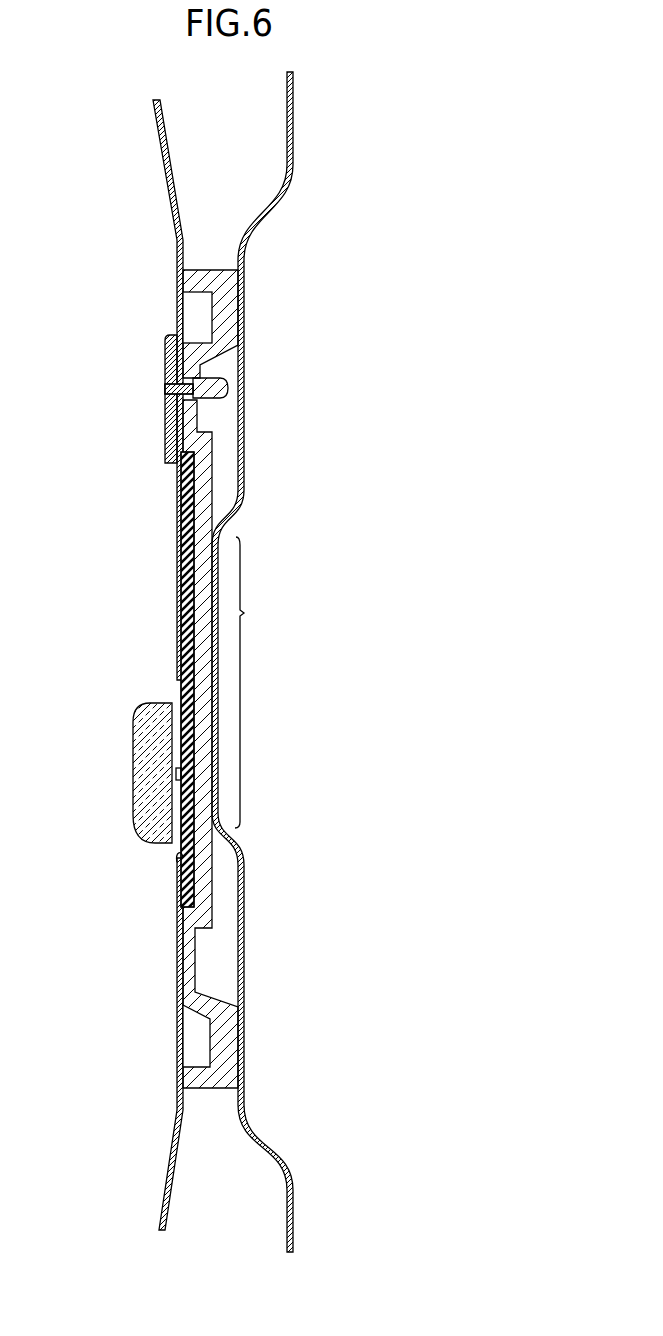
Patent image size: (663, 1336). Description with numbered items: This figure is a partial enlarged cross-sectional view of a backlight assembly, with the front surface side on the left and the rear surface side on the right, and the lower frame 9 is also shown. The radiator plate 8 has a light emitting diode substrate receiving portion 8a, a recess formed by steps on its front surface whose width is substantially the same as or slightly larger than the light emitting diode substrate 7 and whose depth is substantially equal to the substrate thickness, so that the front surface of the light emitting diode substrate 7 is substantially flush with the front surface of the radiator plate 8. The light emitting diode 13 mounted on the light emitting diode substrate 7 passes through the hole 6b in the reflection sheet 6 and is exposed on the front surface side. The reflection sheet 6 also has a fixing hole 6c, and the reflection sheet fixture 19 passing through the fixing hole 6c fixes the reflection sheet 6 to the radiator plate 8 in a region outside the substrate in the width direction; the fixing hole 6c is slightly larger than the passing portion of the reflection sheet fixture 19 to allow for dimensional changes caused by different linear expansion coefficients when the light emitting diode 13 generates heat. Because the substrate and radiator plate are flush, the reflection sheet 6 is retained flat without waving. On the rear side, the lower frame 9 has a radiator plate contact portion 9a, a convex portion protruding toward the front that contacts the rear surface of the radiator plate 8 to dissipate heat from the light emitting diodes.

The reflection sheet 6 is at (174, 1157).
The hole 6b is at (178, 860).
The fixing hole 6c is at (176, 386).
The light emitting diode substrate 7 is at (196, 697).
The radiator plate 8 is at (208, 1090).
The light emitting diode substrate receiving portion 8a is at (181, 582).
The lower frame 9 is at (293, 1206).
The radiator plate contact portion 9a is at (257, 682).
The light emitting diode 13 is at (133, 772).
The reflection sheet fixture 19 is at (166, 392).